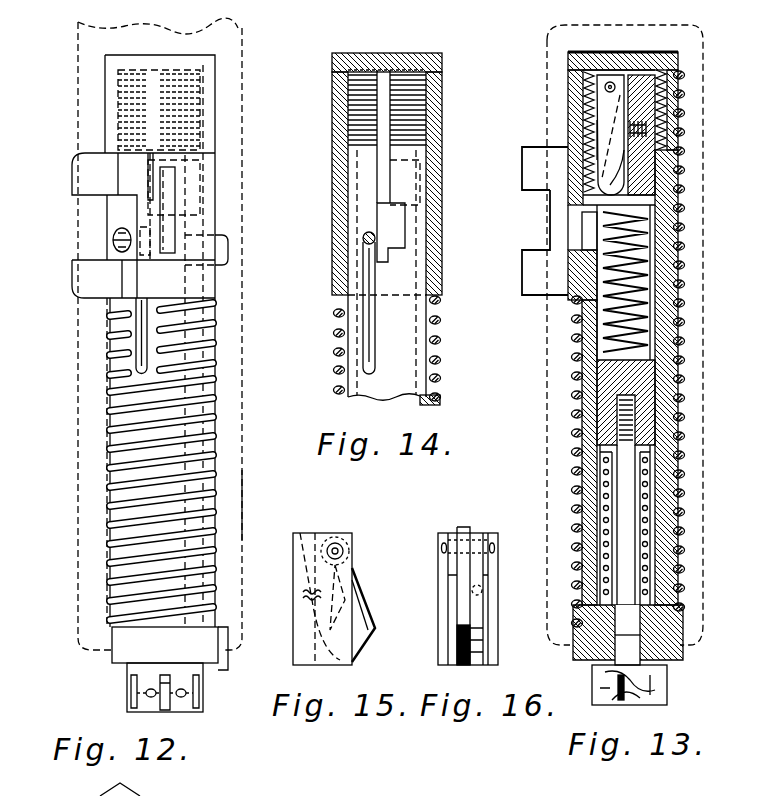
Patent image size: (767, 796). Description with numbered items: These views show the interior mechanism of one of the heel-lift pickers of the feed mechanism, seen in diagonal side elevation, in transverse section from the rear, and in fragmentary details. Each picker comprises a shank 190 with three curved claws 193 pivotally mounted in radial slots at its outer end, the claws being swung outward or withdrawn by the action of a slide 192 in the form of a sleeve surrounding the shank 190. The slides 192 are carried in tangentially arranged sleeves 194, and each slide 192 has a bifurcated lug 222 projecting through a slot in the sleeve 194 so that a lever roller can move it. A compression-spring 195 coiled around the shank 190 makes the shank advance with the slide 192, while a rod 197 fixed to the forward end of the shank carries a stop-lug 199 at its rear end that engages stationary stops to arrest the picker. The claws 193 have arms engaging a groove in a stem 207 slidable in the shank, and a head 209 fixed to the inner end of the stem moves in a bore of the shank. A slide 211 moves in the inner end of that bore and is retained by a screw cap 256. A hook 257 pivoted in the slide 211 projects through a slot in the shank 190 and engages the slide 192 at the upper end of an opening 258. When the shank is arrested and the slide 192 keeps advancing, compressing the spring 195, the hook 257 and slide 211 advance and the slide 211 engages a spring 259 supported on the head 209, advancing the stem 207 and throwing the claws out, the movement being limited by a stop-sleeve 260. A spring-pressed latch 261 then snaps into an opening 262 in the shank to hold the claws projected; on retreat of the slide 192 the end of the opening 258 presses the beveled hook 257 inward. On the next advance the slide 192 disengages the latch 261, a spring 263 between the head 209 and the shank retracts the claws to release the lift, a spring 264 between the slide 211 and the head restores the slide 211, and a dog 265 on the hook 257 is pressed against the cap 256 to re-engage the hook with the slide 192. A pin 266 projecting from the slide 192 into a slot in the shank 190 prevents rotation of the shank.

In FIG. 14, the shank 190 is at (390, 386).
In FIG. 13, the shank 190 is at (667, 664).
In FIG. 12, the slide 192 is at (208, 217).
In FIG. 14, the slide 192 is at (437, 277).
In FIG. 13, the slide 192 is at (678, 213).
In FIG. 13, the curved claws 193 is at (667, 696).
In FIG. 12, the tangentially arranged sleeves 194 is at (245, 466).
In FIG. 12, the compression-spring 195 is at (108, 413).
In FIG. 14, the compression-spring 195 is at (441, 342).
In FIG. 13, the compression-spring 195 is at (575, 464).
In FIG. 12, the rod 197 is at (242, 505).
In FIG. 12, the stop-lug 199 is at (228, 257).
In FIG. 13, the stem 207 is at (683, 647).
In FIG. 13, the head 209 is at (647, 427).
In FIG. 15, the slide 211 is at (293, 622).
In FIG. 16, the slide 211 is at (490, 573).
In FIG. 13, the slide 211 is at (660, 100).
In FIG. 12, the bifurcated lug 222 is at (90, 273).
In FIG. 13, the bifurcated lug 222 is at (527, 286).
In FIG. 12, the screw cap 256 is at (110, 94).
In FIG. 14, the screw cap 256 is at (350, 93).
In FIG. 13, the screw cap 256 is at (680, 78).
In FIG. 14, the hook 257 is at (382, 173).
In FIG. 15, the hook 257 is at (357, 610).
In FIG. 16, the hook 257 is at (462, 643).
In FIG. 13, the hook 257 is at (597, 143).
In FIG. 12, the opening 258 is at (152, 165).
In FIG. 13, the opening 258 is at (570, 175).
In FIG. 13, the spring 259 is at (678, 264).
In FIG. 13, the stop-sleeve 260 is at (650, 503).
In FIG. 12, the spring-pressed latch 261 is at (170, 192).
In FIG. 15, the spring-pressed latch 261 is at (348, 665).
In FIG. 16, the spring-pressed latch 261 is at (478, 643).
In FIG. 13, the spring-pressed latch 261 is at (613, 176).
In FIG. 14, the opening 262 is at (397, 232).
In FIG. 13, the opening 262 is at (583, 228).
In FIG. 13, the spring 263 is at (650, 470).
In FIG. 13, the spring 264 is at (660, 238).
In FIG. 15, the dog 265 is at (307, 531).
In FIG. 13, the dog 265 is at (627, 70).
In FIG. 12, the pin 266 is at (112, 231).
In FIG. 14, the pin 266 is at (366, 232).